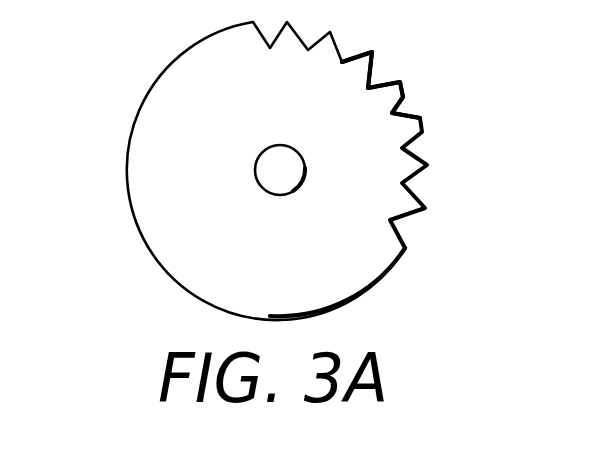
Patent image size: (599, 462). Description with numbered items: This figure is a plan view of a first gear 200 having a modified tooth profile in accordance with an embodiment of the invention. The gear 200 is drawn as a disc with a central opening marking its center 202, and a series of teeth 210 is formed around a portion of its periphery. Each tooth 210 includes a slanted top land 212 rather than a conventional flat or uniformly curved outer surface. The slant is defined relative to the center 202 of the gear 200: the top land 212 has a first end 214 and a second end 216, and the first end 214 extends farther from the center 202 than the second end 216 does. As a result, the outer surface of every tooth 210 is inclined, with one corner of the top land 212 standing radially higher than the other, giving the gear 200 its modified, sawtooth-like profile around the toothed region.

The first gear 200 is at (145, 95).
The center 202 is at (304, 184).
The teeth 210 is at (462, 154).
The slanted top land 212 is at (365, 53).
The first end 214 is at (416, 73).
The second end 216 is at (418, 102).